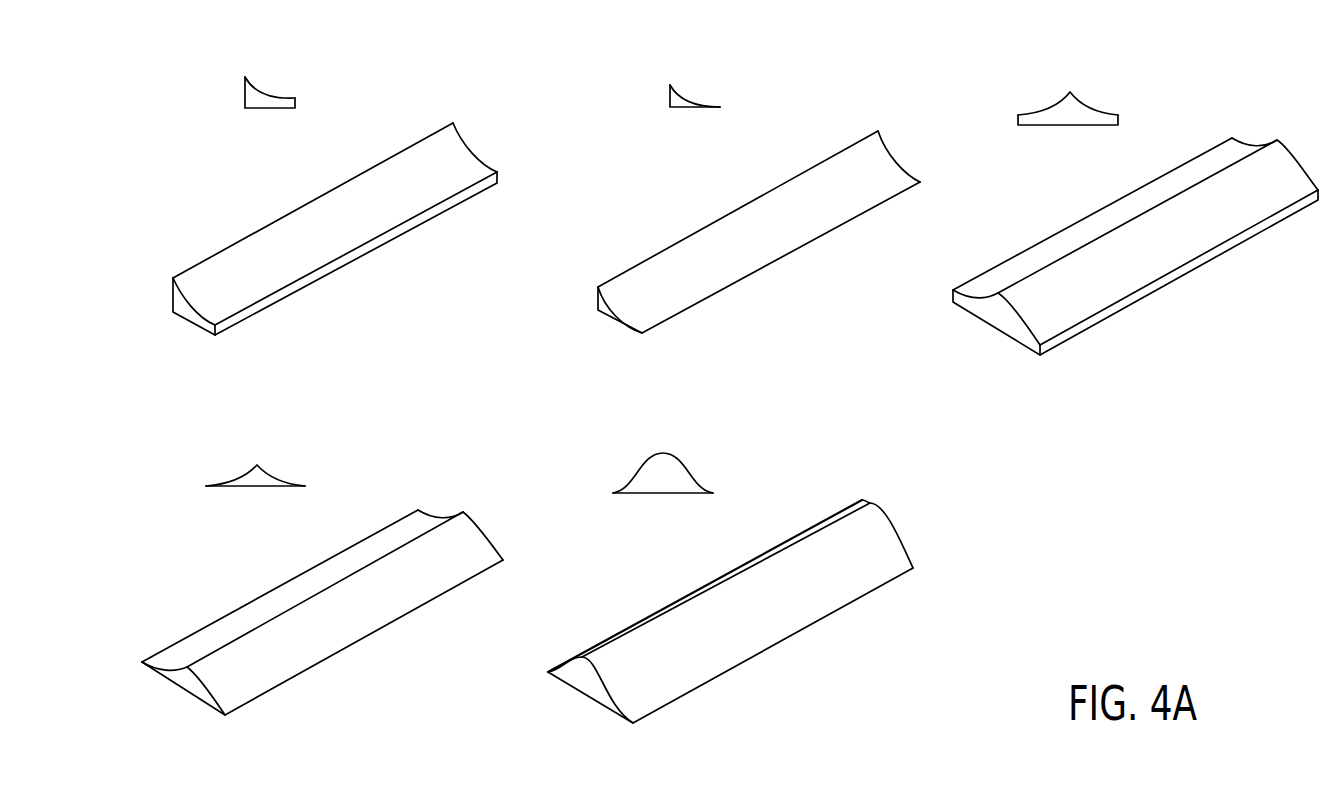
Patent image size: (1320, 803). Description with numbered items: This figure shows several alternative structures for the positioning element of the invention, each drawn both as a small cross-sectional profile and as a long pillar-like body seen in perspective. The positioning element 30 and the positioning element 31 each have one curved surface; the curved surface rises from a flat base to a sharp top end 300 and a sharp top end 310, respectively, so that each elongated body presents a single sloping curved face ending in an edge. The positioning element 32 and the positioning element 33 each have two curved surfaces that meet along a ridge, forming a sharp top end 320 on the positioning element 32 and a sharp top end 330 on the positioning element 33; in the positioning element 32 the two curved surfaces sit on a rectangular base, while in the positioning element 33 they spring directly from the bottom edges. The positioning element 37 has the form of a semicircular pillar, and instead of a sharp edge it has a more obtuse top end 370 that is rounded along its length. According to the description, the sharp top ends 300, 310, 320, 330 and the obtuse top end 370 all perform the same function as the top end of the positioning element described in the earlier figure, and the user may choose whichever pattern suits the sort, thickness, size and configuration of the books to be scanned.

The positioning element 30 is at (335, 179).
The sharp top end 300 is at (245, 72).
The positioning element 31 is at (759, 182).
The sharp top end 310 is at (670, 83).
The positioning element 32 is at (1135, 198).
The sharp top end 320 is at (1070, 90).
The positioning element 33 is at (322, 563).
The sharp top end 330 is at (257, 463).
The positioning element 37 is at (730, 563).
The obtuse top end 370 is at (663, 452).